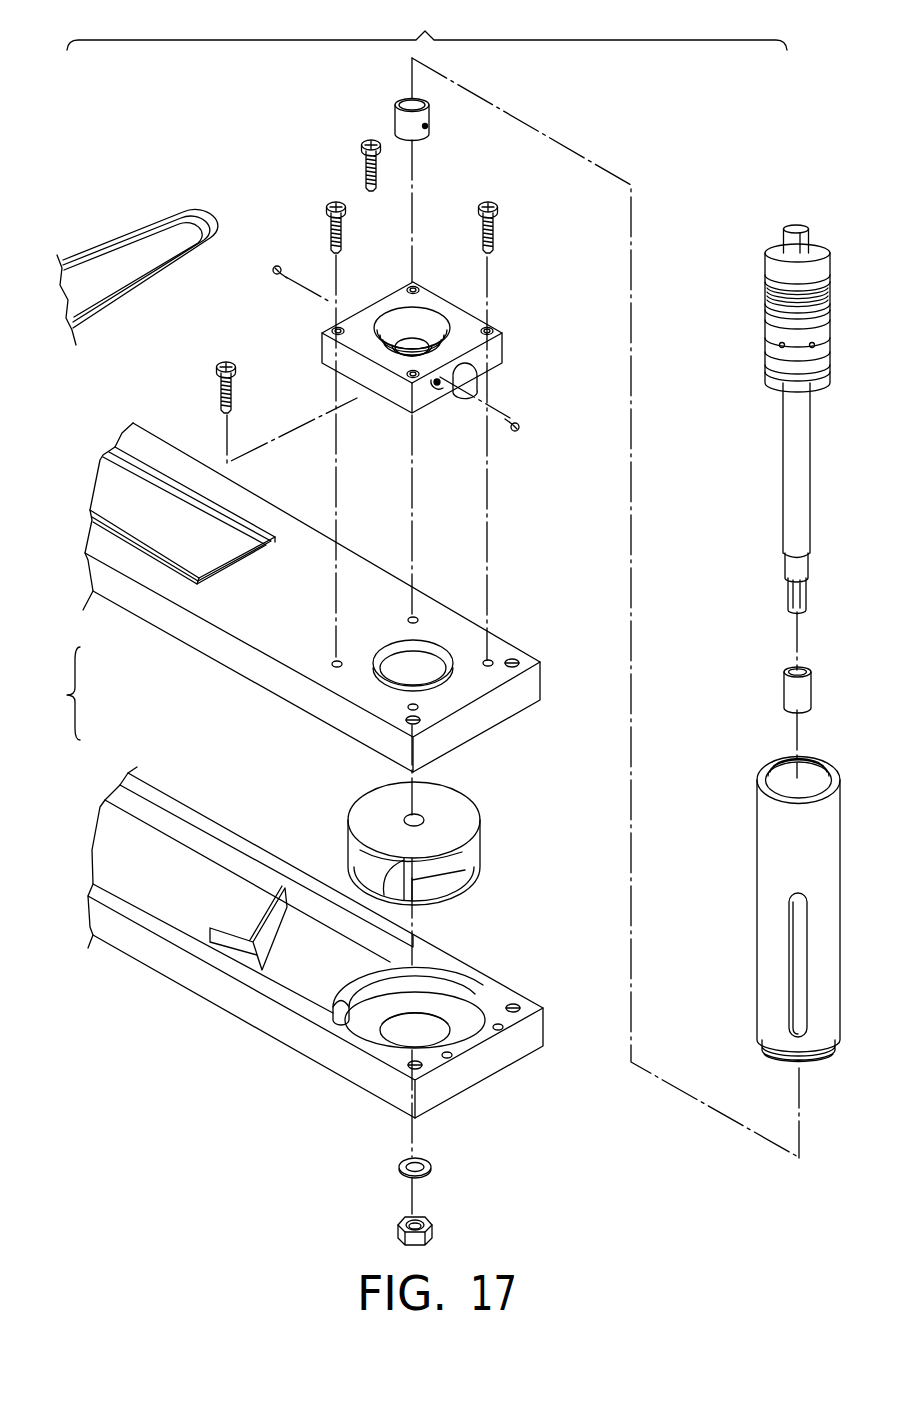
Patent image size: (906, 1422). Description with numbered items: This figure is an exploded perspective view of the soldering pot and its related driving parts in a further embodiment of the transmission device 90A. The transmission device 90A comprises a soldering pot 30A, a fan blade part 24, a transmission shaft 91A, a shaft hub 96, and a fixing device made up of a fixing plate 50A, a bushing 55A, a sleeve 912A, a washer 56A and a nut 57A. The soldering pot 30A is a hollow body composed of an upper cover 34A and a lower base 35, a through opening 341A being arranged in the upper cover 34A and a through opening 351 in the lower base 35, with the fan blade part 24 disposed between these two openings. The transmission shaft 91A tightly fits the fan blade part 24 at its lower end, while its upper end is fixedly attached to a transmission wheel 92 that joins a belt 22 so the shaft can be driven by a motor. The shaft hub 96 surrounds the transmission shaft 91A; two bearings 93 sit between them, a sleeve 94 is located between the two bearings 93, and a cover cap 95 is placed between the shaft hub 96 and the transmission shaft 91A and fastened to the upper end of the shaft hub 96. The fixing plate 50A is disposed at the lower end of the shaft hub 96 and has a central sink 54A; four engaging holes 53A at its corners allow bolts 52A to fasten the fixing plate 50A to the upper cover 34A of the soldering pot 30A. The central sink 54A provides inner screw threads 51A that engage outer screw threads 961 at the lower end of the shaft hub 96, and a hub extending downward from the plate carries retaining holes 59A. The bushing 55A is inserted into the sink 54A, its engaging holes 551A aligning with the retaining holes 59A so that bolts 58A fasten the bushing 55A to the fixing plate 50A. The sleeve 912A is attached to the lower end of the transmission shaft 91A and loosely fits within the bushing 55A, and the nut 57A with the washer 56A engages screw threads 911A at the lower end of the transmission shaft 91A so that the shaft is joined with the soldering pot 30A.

The transmission device 90A is at (427, 25).
The belt 22 is at (122, 232).
The bushing 55A is at (402, 98).
The engaging holes 551A is at (428, 128).
The bolts 52A is at (335, 205).
The bolts 58A is at (277, 266).
The fixing plate 50A is at (493, 323).
The engaging holes 53A is at (328, 324).
The inner screw threads 51A is at (430, 318).
The central sink 54A is at (465, 352).
The retaining holes 59A is at (439, 386).
The soldering pot 30A is at (43, 693).
The upper cover 34A is at (130, 600).
The through opening 341A is at (432, 668).
The lower base 35 is at (162, 795).
The through opening 351 is at (430, 1018).
The fan blade part 24 is at (347, 838).
The washer 56A is at (433, 1167).
The nut 57A is at (433, 1228).
The transmission wheel 92 is at (773, 262).
The cover cap 95 is at (765, 291).
The bearings 93 is at (765, 312).
The sleeve 94 is at (763, 335).
The transmission shaft 91A is at (790, 497).
The screw threads 911A is at (783, 598).
The sleeve 912A is at (784, 690).
The shaft hub 96 is at (760, 865).
The outer screw threads 961 is at (763, 1052).